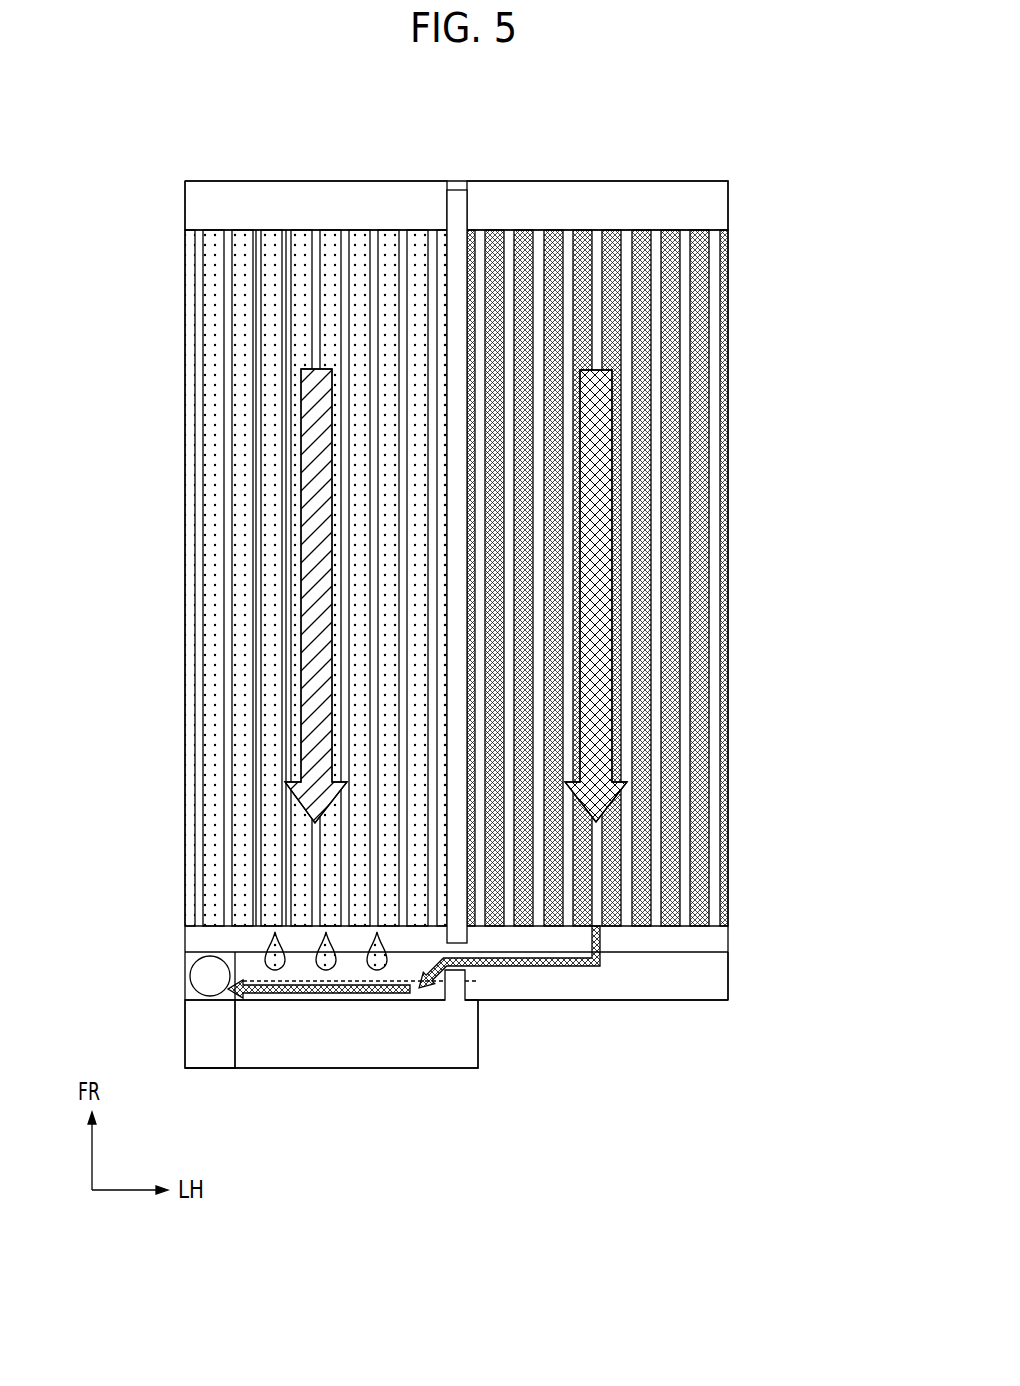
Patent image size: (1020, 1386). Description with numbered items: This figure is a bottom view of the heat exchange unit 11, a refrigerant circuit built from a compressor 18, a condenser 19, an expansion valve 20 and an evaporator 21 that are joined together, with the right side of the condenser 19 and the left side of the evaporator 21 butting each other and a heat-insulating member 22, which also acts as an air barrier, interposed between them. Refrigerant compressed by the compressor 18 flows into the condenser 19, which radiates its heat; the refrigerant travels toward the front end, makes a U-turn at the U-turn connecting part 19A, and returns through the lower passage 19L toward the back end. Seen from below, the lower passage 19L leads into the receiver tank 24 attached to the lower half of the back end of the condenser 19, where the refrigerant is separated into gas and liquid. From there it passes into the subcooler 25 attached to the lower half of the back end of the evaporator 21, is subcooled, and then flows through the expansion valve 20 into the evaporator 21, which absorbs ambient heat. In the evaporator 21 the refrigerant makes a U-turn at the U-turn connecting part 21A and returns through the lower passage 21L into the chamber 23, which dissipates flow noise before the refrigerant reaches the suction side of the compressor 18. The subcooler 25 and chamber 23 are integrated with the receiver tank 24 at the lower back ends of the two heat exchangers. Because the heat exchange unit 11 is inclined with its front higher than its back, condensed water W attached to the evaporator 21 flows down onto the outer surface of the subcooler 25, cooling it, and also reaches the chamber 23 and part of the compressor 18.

The heat exchange unit 11 is at (455, 627).
The compressor 18 is at (382, 1080).
The condenser 19 is at (652, 578).
The U-turn connecting part 19A is at (552, 188).
The lower passage 19L is at (670, 673).
The expansion valve 20 is at (200, 976).
The evaporator 21 is at (259, 578).
The U-turn connecting part 21A is at (313, 186).
The lower passage 21L is at (236, 733).
The heat-insulating member 22 is at (456, 262).
The chamber 23 is at (202, 1036).
The receiver tank 24 is at (625, 988).
The subcooler 25 is at (268, 1003).
The condensed water W is at (347, 970).